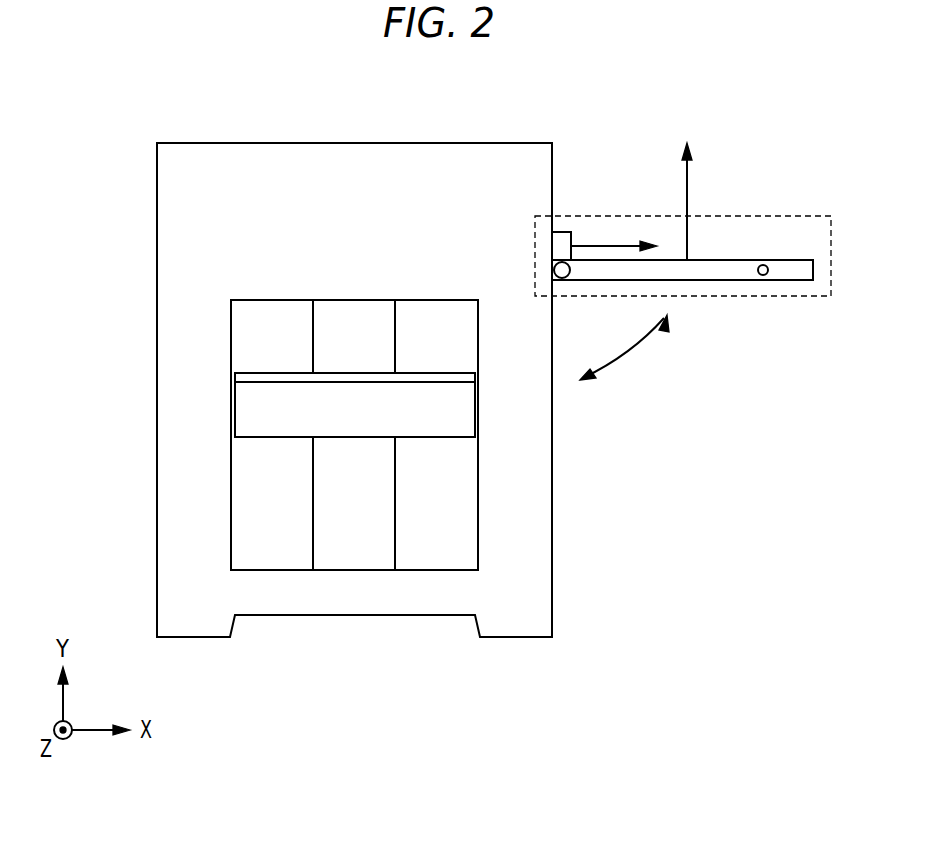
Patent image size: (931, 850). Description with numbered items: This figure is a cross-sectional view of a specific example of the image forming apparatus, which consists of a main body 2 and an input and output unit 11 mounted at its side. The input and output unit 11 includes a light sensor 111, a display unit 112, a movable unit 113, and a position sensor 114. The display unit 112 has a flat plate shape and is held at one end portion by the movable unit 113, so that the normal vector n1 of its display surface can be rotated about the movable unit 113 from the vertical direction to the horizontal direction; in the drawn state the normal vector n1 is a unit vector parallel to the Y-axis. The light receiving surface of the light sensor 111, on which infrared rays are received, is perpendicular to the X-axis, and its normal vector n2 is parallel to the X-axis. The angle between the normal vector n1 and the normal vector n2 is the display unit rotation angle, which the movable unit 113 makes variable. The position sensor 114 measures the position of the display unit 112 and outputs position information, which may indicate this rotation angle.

The main body 2 is at (356, 143).
The input and output unit 11 is at (760, 216).
The light sensor 111 is at (552, 245).
The display unit 112 is at (707, 280).
The movable unit 113 is at (554, 270).
The position sensor 114 is at (765, 277).
The normal vector of the display surface n1 is at (685, 186).
The normal vector of the light receiving surface n2 is at (612, 216).